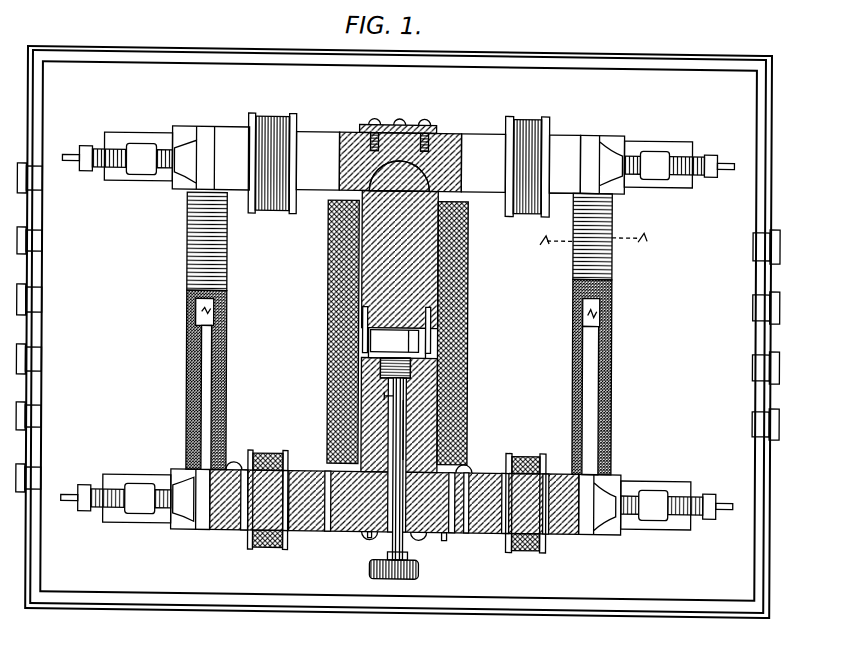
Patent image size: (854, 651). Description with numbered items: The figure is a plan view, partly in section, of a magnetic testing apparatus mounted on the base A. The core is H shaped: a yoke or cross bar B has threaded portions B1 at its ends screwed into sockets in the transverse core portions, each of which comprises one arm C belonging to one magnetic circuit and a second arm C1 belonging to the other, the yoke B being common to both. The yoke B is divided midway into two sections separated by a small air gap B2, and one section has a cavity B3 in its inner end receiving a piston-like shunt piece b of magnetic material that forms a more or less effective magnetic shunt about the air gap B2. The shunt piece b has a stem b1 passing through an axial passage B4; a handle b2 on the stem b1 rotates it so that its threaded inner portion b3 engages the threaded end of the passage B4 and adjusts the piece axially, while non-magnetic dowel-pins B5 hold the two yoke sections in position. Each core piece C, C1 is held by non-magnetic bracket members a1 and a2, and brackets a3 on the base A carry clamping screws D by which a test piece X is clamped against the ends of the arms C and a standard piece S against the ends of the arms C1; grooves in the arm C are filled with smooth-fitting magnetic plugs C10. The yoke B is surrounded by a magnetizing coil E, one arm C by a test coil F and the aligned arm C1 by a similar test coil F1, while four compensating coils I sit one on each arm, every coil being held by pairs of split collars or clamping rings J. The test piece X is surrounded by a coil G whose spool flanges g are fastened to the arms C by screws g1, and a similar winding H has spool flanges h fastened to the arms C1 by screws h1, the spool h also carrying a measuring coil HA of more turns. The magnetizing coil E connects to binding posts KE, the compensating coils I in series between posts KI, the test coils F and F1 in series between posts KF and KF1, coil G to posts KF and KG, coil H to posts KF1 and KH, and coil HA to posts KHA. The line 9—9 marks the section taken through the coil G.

The base A is at (398, 332).
The plugs C10 is at (212, 528).
The core arm C is at (488, 488).
The core arm C1 is at (296, 556).
The yoke B is at (430, 264).
The bracket member a1 is at (381, 121).
The threaded portions B1 is at (420, 123).
The magnetizing coil E is at (468, 242).
The air gap B2 is at (432, 330).
The dowel-pins B5 is at (364, 313).
The cavity B3 is at (468, 356).
The threaded inner portion b3 is at (382, 355).
The shunt piece b is at (372, 331).
The axial passage B4 is at (390, 392).
The stem b1 is at (406, 414).
The handle b2 is at (421, 567).
The test coil F1 is at (352, 538).
The test coil F is at (450, 535).
The split collars J is at (249, 124).
The compensating coils I is at (274, 122).
The bracket member a2 is at (612, 128).
The brackets a3 is at (142, 165).
The clamping screws D is at (103, 172).
The spool flanges h is at (180, 198).
The screws h1 is at (236, 207).
The measuring coil HA is at (188, 336).
The winding H is at (197, 306).
The standard piece S is at (203, 401).
The coil G is at (611, 312).
The test piece X is at (592, 401).
The spool flanges g is at (612, 187).
The screws g1 is at (554, 188).
The section line 9 is at (591, 240).
The binding posts KHA is at (40, 213).
The binding post KH is at (36, 300).
The binding post KF1 is at (36, 362).
The binding post KF is at (36, 418).
The binding post KG is at (38, 476).
The binding posts KE is at (756, 238).
The binding posts KI is at (756, 406).